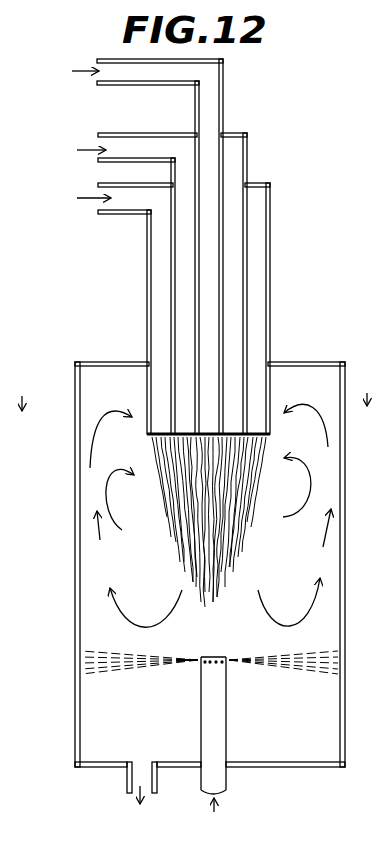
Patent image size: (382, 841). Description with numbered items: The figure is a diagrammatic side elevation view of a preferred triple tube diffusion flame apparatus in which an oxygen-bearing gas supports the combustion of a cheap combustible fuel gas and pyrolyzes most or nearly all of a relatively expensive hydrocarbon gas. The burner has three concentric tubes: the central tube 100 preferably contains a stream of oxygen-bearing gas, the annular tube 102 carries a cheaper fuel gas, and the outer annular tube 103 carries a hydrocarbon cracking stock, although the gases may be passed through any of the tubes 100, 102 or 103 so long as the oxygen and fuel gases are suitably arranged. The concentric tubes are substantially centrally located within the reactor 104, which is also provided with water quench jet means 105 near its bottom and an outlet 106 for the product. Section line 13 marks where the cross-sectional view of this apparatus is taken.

The central tube 100 is at (223, 90).
The annular tube 102 is at (247, 150).
The annular tube 103 is at (271, 223).
The reactor 104 is at (345, 507).
The water quench jet means 105 is at (223, 718).
The outlet 106 is at (126, 785).
The section line for FIG. 13 is at (72, 388).